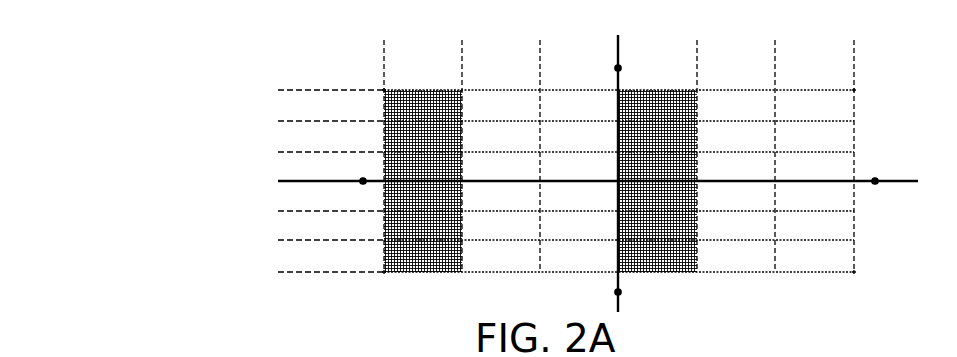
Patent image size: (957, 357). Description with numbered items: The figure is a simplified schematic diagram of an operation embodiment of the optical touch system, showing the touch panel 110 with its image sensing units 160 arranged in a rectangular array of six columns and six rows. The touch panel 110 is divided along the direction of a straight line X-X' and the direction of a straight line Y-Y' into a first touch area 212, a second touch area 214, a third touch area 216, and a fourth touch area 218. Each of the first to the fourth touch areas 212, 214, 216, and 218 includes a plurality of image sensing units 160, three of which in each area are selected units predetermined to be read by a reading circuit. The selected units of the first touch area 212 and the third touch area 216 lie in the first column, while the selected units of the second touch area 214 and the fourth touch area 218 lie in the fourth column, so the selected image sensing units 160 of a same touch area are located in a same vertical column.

The touch panel 110 is at (238, 62).
The image sensing units 160 is at (835, 138).
The first touch area 212 is at (384, 90).
The second touch area 214 is at (854, 90).
The third touch area 216 is at (384, 272).
The fourth touch area 218 is at (854, 272).